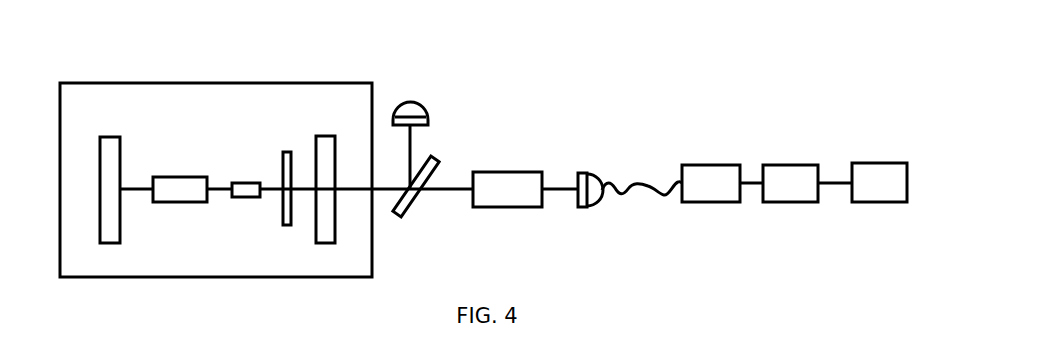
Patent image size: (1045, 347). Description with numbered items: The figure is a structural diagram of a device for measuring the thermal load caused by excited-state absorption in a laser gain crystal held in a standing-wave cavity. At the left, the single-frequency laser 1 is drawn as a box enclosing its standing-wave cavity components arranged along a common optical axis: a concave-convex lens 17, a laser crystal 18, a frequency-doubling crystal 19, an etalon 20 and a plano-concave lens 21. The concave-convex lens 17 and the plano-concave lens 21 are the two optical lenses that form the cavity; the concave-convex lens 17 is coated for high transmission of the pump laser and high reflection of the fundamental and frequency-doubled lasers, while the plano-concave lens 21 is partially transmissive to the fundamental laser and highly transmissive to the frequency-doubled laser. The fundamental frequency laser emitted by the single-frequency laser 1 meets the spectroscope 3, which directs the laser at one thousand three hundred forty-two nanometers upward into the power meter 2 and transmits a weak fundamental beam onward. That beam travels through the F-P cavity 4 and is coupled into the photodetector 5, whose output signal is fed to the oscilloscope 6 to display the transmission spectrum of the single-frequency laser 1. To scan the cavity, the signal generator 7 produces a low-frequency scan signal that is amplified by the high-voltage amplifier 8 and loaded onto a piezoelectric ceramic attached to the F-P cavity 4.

The single-frequency laser 1 is at (225, 84).
The power meter 2 is at (412, 100).
The spectroscope 3 is at (405, 220).
The F-P cavity 4 is at (510, 207).
The photodetector 5 is at (586, 172).
The oscilloscope 6 is at (703, 202).
The signal generator 7 is at (785, 202).
The high-voltage amplifier 8 is at (865, 202).
The concave-convex lens 17 is at (109, 174).
The laser crystal 18 is at (180, 176).
The frequency-doubling crystal 19 is at (246, 176).
The etalon 20 is at (287, 175).
The plano-concave lens 21 is at (327, 172).